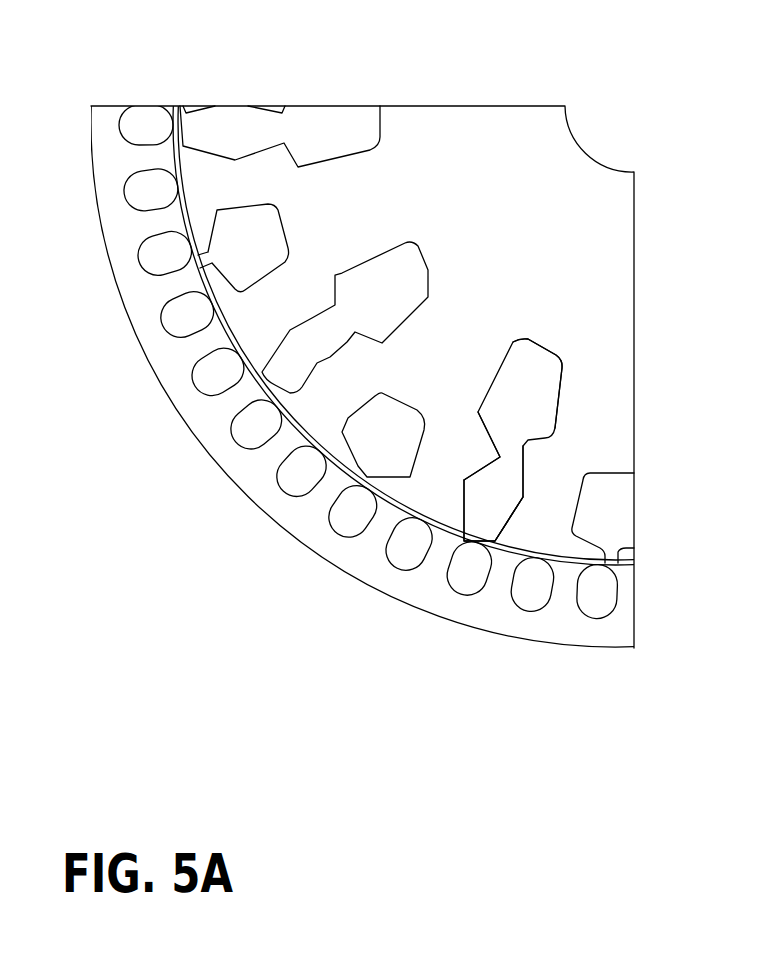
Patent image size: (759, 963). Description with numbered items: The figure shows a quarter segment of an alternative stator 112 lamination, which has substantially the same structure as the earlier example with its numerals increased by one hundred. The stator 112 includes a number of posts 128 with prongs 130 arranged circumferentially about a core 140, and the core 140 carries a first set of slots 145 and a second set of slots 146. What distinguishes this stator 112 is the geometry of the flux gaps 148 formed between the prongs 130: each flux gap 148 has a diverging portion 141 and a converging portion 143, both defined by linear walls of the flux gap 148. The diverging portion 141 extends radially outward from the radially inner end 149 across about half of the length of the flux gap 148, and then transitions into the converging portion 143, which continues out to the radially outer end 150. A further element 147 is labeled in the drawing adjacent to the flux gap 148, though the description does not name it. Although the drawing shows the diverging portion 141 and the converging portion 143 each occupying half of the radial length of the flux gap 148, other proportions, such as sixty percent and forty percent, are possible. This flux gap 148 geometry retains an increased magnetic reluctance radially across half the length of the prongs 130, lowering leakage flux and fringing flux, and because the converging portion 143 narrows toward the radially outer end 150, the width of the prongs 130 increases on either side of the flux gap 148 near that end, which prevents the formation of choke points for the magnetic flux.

The stator 112 is at (609, 217).
The posts 128 is at (448, 320).
The prongs 130 is at (418, 487).
The core 140 is at (535, 263).
The diverging portion 141 is at (311, 318).
The converging portion 143 is at (312, 378).
The first set of slots 145 is at (575, 440).
The second set of slots 146 is at (607, 505).
The upper pocket portion 147 is at (537, 409).
The flux gap 148 is at (511, 502).
The radially inner end 149 is at (501, 458).
The radially outer end 150 is at (489, 520).